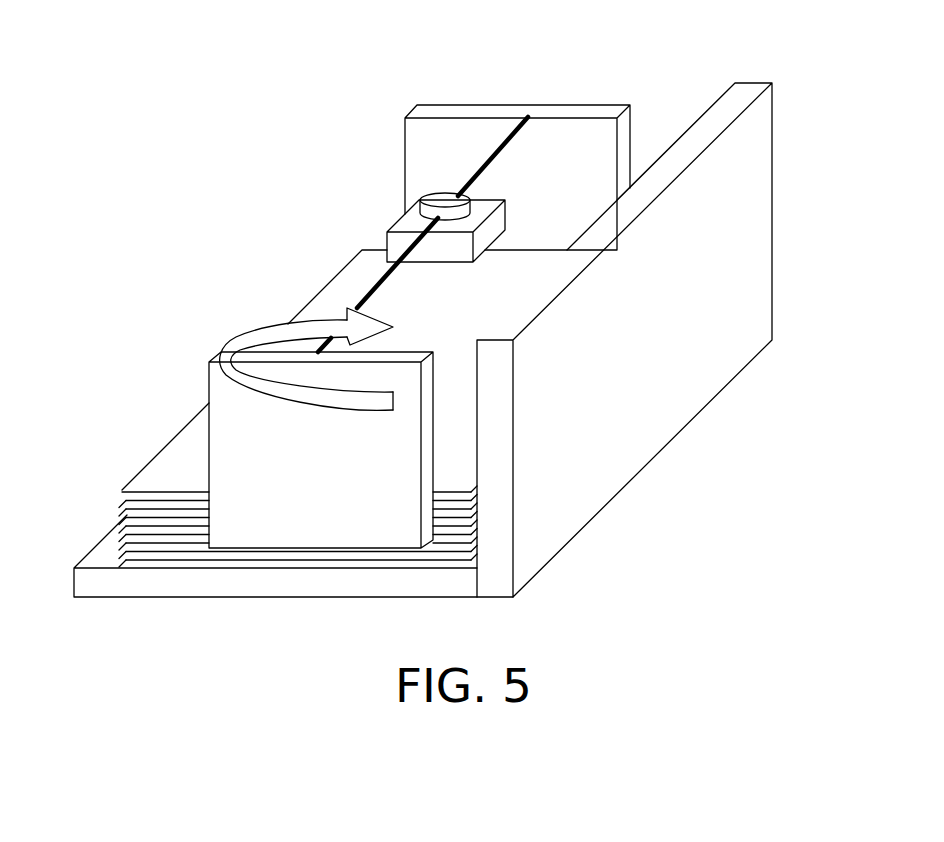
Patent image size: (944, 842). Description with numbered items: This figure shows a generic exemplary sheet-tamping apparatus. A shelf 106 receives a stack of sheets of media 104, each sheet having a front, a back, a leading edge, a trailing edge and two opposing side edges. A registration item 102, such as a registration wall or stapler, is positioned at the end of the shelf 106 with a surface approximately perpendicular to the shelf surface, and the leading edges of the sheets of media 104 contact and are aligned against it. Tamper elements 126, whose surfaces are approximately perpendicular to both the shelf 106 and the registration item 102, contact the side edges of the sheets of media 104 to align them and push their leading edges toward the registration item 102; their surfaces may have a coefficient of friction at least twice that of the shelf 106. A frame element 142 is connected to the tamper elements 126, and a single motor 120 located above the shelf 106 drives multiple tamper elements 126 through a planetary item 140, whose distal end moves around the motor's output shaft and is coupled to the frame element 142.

The registration item 102 is at (777, 220).
The sheets of media 104 is at (182, 473).
The shelf 106 is at (375, 583).
The motor 120 is at (395, 220).
The tamper elements 126 is at (567, 118).
The planetary item 140 is at (430, 198).
The frame element 142 is at (370, 283).